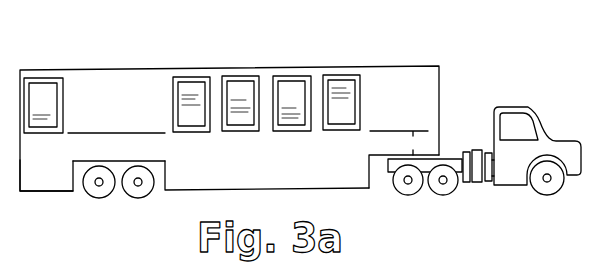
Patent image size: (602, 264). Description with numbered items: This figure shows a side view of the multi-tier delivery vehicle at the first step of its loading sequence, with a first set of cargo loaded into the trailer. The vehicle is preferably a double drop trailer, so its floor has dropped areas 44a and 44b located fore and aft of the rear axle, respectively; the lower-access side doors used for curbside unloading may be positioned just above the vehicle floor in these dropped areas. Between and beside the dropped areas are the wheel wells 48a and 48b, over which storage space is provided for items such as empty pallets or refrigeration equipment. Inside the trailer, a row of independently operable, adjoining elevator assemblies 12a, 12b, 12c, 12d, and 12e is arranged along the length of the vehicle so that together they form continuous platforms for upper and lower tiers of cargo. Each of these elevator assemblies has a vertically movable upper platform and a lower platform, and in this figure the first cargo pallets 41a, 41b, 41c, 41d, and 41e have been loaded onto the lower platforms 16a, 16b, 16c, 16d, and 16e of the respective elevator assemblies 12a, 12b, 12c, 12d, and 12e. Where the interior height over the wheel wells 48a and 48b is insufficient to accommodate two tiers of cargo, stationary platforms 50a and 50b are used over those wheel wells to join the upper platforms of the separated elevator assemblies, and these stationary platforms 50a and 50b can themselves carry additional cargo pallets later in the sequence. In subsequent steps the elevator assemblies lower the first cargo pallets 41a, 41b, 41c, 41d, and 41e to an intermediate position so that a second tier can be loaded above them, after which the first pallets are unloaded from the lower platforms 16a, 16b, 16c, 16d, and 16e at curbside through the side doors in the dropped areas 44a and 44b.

The elevator assembly 12a is at (59, 78).
The elevator assembly 12b is at (176, 78).
The elevator assembly 12c is at (228, 77).
The elevator assembly 12d is at (282, 77).
The elevator assembly 12e is at (334, 77).
The first cargo pallet 41a is at (47, 90).
The first cargo pallet 41b is at (192, 88).
The first cargo pallet 41c is at (245, 88).
The first cargo pallet 41d is at (297, 88).
The first cargo pallet 41e is at (352, 88).
The lower platform 16a is at (59, 100).
The lower platform 16b is at (176, 100).
The lower platform 16c is at (228, 100).
The lower platform 16d is at (282, 100).
The lower platform 16e is at (334, 100).
The dropped area 44a is at (259, 189).
The dropped area 44b is at (37, 191).
The wheel well 48a is at (127, 161).
The wheel well 48b is at (380, 155).
The stationary platform 50a is at (127, 133).
The stationary platform 50b is at (380, 131).